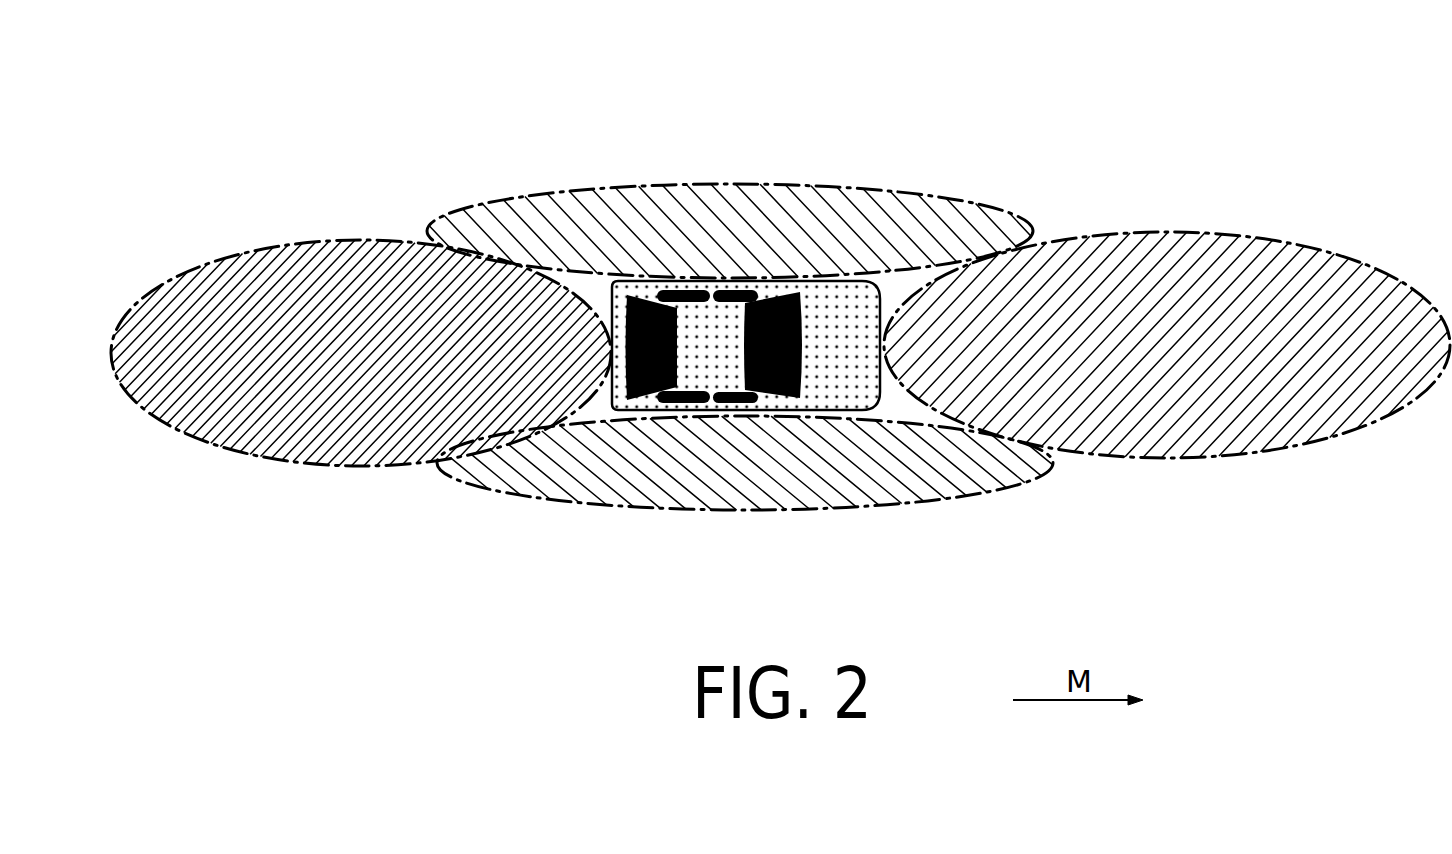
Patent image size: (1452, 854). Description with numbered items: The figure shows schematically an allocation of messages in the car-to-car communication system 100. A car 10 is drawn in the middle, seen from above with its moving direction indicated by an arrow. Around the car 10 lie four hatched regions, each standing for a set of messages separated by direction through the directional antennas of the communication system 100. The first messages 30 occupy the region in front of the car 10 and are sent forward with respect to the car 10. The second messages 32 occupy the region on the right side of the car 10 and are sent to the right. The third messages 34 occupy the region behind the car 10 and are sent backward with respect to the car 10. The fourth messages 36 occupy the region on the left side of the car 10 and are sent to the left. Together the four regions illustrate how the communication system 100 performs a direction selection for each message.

The car 10 is at (843, 280).
The first messages 30 is at (1282, 452).
The second messages 32 is at (653, 513).
The third messages 34 is at (227, 260).
The fourth messages 36 is at (612, 187).
The communication system 100 is at (1033, 173).